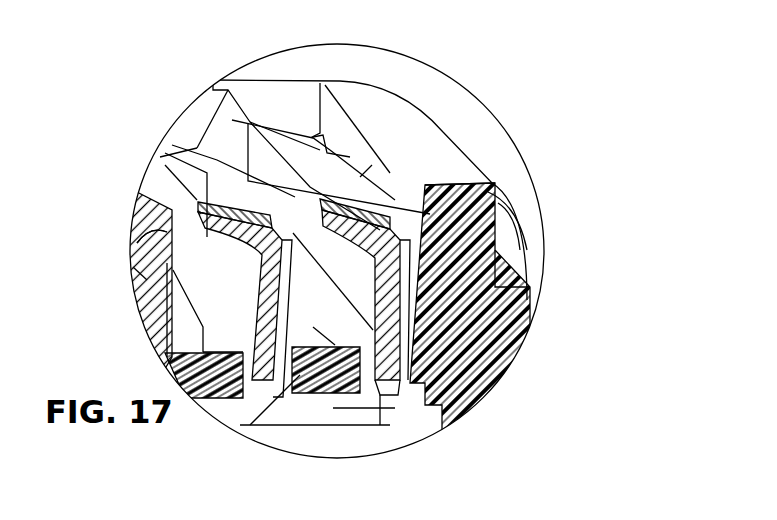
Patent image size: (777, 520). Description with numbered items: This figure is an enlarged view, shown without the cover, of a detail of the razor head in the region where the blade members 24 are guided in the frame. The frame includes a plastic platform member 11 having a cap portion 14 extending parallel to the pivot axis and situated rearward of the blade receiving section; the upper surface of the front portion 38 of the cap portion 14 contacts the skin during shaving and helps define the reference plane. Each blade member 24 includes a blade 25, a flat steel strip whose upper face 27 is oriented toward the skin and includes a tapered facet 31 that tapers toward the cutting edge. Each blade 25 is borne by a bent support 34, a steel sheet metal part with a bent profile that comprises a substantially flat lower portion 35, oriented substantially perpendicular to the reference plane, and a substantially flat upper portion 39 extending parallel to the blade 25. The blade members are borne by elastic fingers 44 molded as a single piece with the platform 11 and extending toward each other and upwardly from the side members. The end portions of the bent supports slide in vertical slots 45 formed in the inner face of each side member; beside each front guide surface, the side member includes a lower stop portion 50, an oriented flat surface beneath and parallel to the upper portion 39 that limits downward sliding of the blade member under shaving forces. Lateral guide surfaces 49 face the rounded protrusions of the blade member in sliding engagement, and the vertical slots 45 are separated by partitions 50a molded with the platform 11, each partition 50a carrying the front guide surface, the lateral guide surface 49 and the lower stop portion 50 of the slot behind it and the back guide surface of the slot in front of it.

The platform member 11 is at (536, 333).
The cap portion 14 is at (487, 370).
The blade member 24 is at (360, 177).
The blade 25 is at (285, 205).
The upper face 27 is at (176, 146).
The tapered facet 31 is at (249, 123).
The bent support 34 is at (370, 397).
The lower portion 35 is at (313, 273).
The front portion 38 is at (438, 150).
The upper portion 39 is at (400, 250).
The elastic finger 44 is at (262, 417).
The vertical slot 45 is at (209, 84).
The lateral guide surface 49 is at (315, 94).
The lower stop portion 50 is at (158, 192).
The partition 50a is at (160, 232).